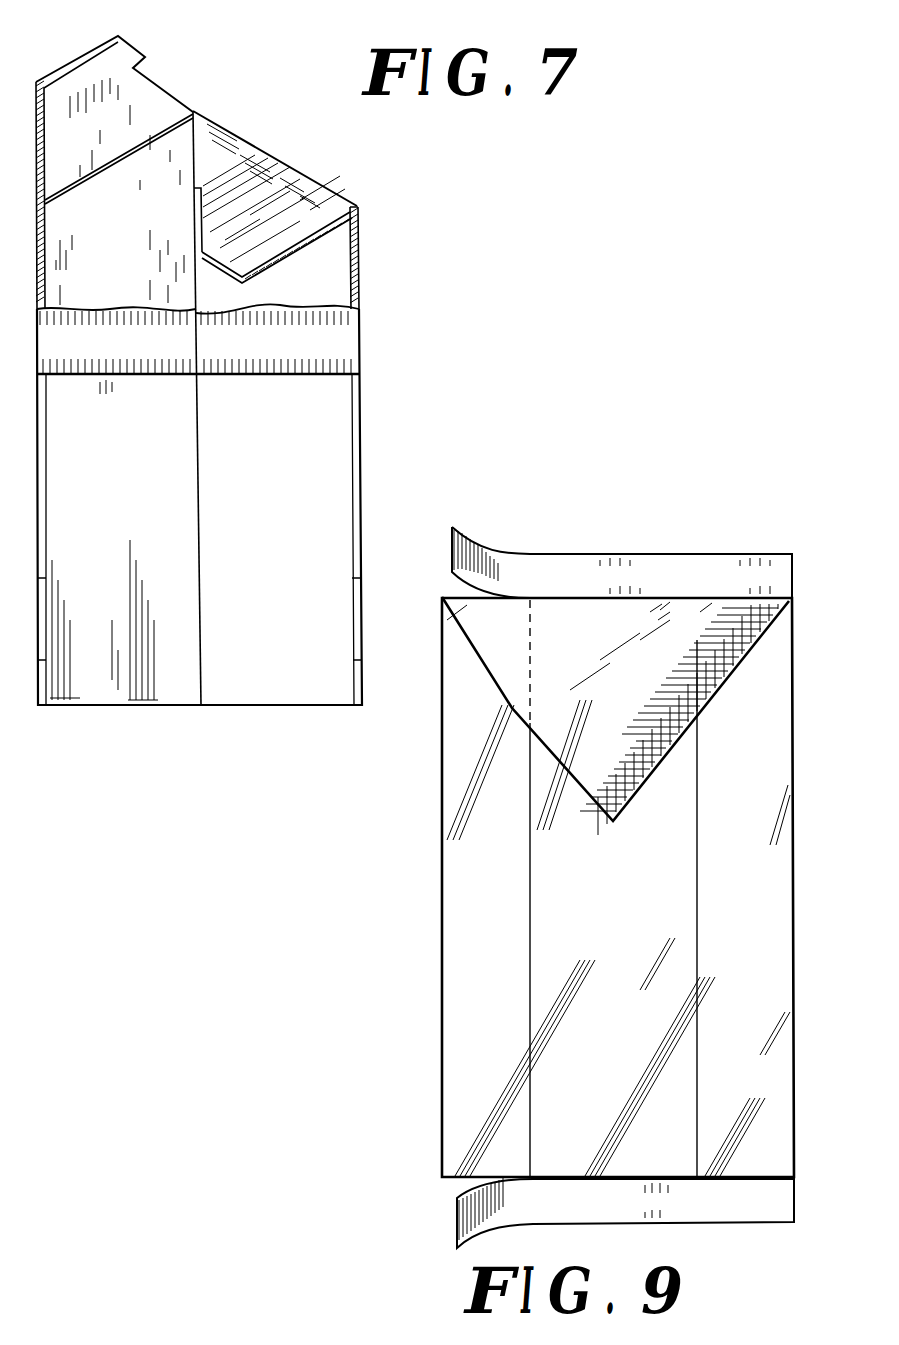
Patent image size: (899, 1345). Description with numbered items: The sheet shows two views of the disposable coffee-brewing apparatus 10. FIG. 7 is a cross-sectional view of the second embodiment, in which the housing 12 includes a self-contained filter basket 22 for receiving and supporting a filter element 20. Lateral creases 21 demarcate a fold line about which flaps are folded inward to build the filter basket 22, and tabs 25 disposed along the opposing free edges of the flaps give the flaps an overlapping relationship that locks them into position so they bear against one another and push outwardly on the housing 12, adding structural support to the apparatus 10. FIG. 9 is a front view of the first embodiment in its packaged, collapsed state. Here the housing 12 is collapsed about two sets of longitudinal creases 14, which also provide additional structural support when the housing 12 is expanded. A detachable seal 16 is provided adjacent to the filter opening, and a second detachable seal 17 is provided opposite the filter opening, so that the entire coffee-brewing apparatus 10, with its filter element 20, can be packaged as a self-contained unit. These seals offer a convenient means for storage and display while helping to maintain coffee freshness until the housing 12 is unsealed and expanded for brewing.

In FIG. 9, the disposable coffee-brewing apparatus 10 is at (800, 723).
In FIG. 7, the housing 12 is at (282, 445).
In FIG. 9, the housing 12 is at (673, 843).
In FIG. 9, the longitudinal creases 14 is at (697, 918).
In FIG. 9, the detachable seal 16 is at (750, 578).
In FIG. 9, the second detachable seal 17 is at (755, 1202).
In FIG. 9, the filter element 20 is at (658, 653).
In FIG. 7, the lateral creases 21 is at (128, 147).
In FIG. 7, the filter basket 22 is at (250, 183).
In FIG. 7, the tabs 25 is at (125, 53).